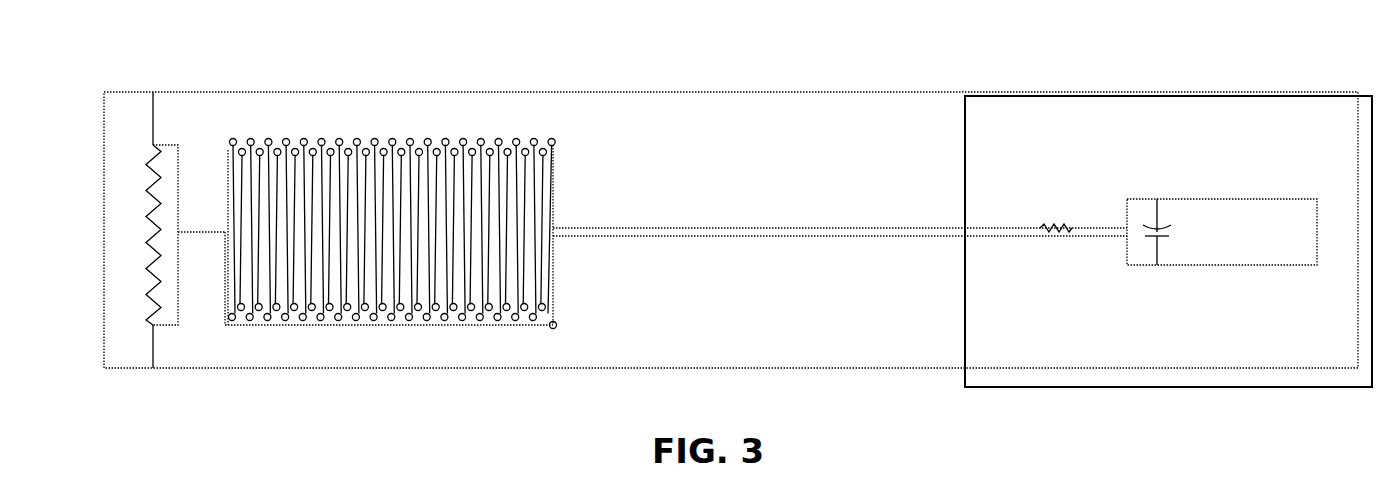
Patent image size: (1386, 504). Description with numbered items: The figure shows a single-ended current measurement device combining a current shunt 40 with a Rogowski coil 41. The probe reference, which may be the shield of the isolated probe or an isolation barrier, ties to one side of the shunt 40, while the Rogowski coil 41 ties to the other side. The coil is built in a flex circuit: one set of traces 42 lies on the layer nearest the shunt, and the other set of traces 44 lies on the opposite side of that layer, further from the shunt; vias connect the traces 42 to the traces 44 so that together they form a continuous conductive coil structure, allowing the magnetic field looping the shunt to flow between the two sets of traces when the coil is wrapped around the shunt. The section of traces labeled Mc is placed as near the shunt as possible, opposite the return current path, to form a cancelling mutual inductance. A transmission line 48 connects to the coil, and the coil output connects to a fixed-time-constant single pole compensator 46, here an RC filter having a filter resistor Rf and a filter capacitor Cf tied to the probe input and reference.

The shunt 40 is at (151, 149).
The Rogowski coil 41 is at (476, 138).
The traces 42 is at (228, 173).
The traces 44 is at (553, 201).
The fixed-time-constant single pole compensator 46 is at (1094, 97).
The transmission line 48 is at (718, 228).